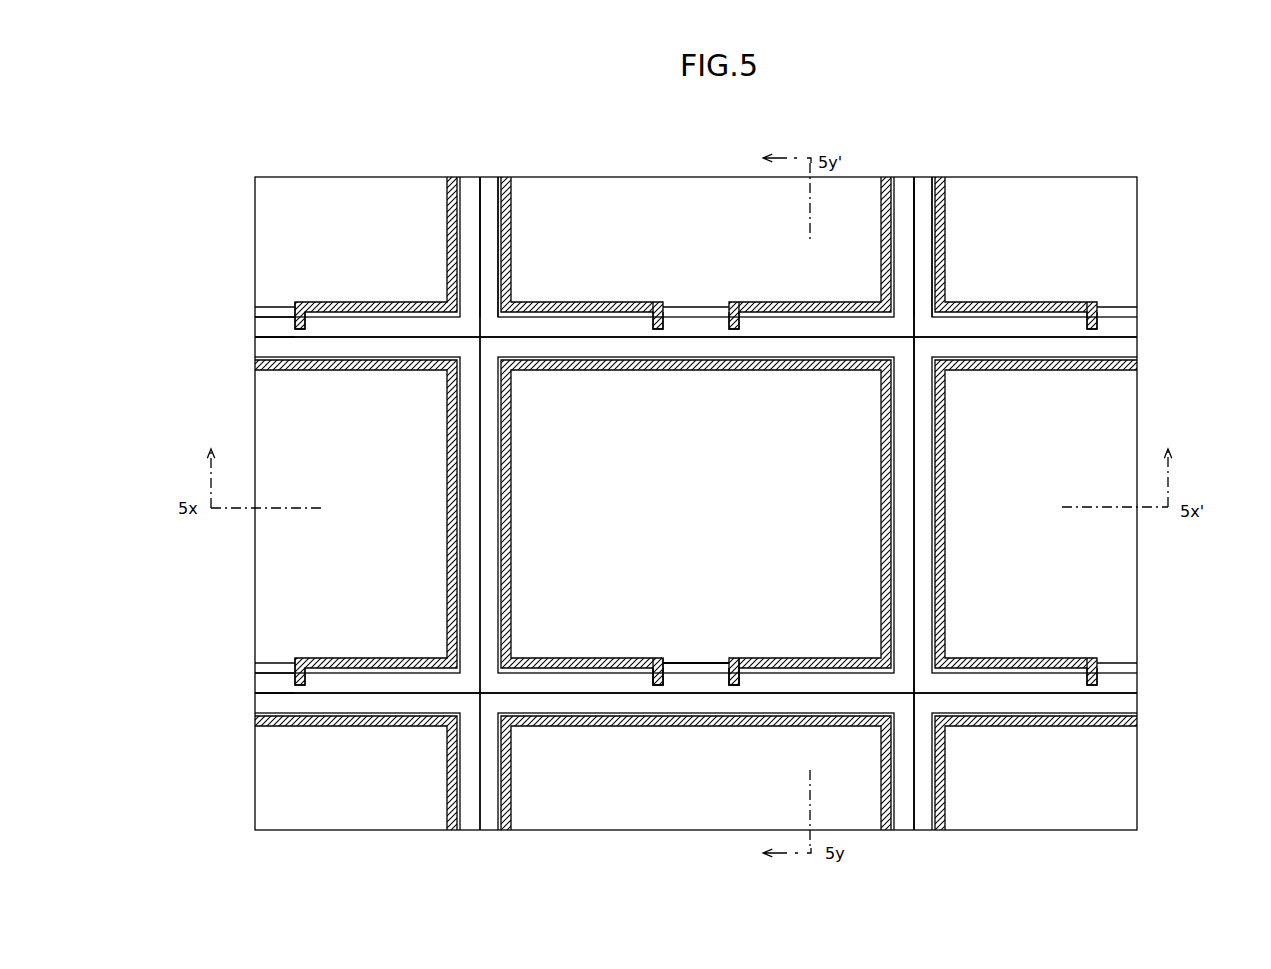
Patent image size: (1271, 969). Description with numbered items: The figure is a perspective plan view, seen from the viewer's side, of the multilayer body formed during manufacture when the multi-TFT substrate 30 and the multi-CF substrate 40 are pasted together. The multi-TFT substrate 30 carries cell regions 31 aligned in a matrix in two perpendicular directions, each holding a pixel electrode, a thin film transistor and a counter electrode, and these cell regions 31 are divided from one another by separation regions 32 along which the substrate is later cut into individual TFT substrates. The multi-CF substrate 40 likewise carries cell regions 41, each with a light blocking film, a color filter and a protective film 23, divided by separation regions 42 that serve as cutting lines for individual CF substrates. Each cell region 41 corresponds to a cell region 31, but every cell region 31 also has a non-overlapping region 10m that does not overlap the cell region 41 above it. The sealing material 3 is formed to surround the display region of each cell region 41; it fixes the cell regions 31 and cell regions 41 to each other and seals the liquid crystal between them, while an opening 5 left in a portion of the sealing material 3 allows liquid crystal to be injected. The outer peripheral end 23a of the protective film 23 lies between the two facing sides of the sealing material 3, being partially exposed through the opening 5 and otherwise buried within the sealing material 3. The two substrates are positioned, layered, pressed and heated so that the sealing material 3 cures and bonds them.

The sealing material 3 is at (882, 543).
The opening 5 is at (676, 647).
The non-overlapping region 10m is at (909, 422).
The protective film 23 is at (688, 663).
The outer peripheral end of the protective film 23a is at (706, 674).
The multi-TFT substrate 30 is at (1036, 168).
The cell region 31 is at (923, 465).
The separation region 32 is at (498, 175).
The multi-CF substrate 40 is at (667, 485).
The cell region 41 is at (906, 631).
The separation region 42 is at (1141, 317).